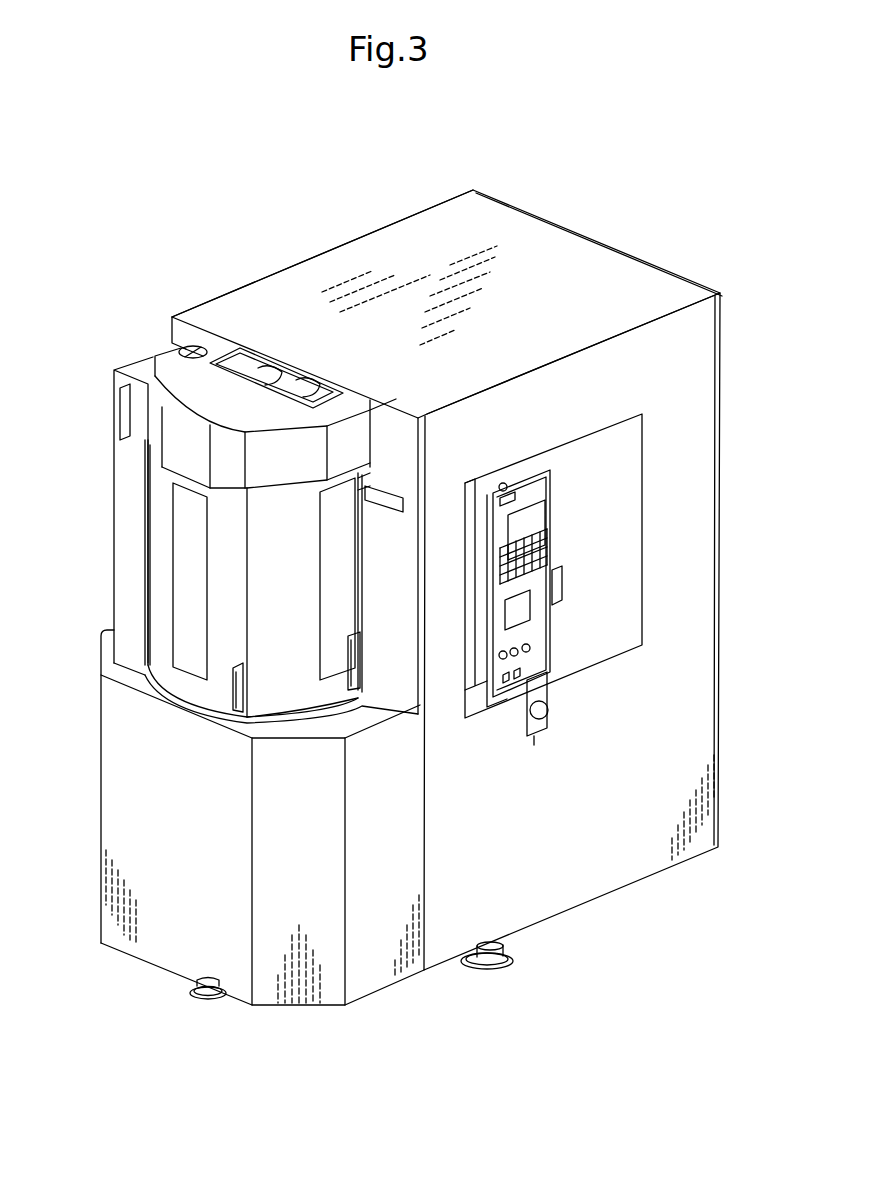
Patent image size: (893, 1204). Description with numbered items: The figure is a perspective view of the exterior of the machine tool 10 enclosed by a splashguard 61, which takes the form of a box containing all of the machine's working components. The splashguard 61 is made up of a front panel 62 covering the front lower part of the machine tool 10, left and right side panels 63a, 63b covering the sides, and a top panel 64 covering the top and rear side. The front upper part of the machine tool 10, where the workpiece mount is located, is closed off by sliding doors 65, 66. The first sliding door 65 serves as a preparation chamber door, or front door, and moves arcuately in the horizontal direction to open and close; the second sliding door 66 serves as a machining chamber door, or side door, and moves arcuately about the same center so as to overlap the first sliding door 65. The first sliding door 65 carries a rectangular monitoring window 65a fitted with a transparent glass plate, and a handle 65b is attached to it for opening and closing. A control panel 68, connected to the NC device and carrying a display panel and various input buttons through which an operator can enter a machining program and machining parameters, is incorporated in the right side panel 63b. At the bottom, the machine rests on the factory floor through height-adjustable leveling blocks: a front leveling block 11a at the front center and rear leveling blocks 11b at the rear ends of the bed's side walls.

The machine tool 10 is at (634, 158).
The front leveling block 11a is at (190, 1000).
The rear leveling block 11b is at (472, 975).
The splashguard 61 is at (648, 285).
The front panel 62 is at (148, 826).
The left side panel 63a is at (353, 242).
The right side panel 63b is at (695, 692).
The top panel 64 is at (455, 218).
The first sliding door 65 is at (180, 683).
The monitoring window 65a is at (183, 552).
The handle 65b is at (341, 570).
The second sliding door 66 is at (282, 680).
The control panel 68 is at (553, 431).